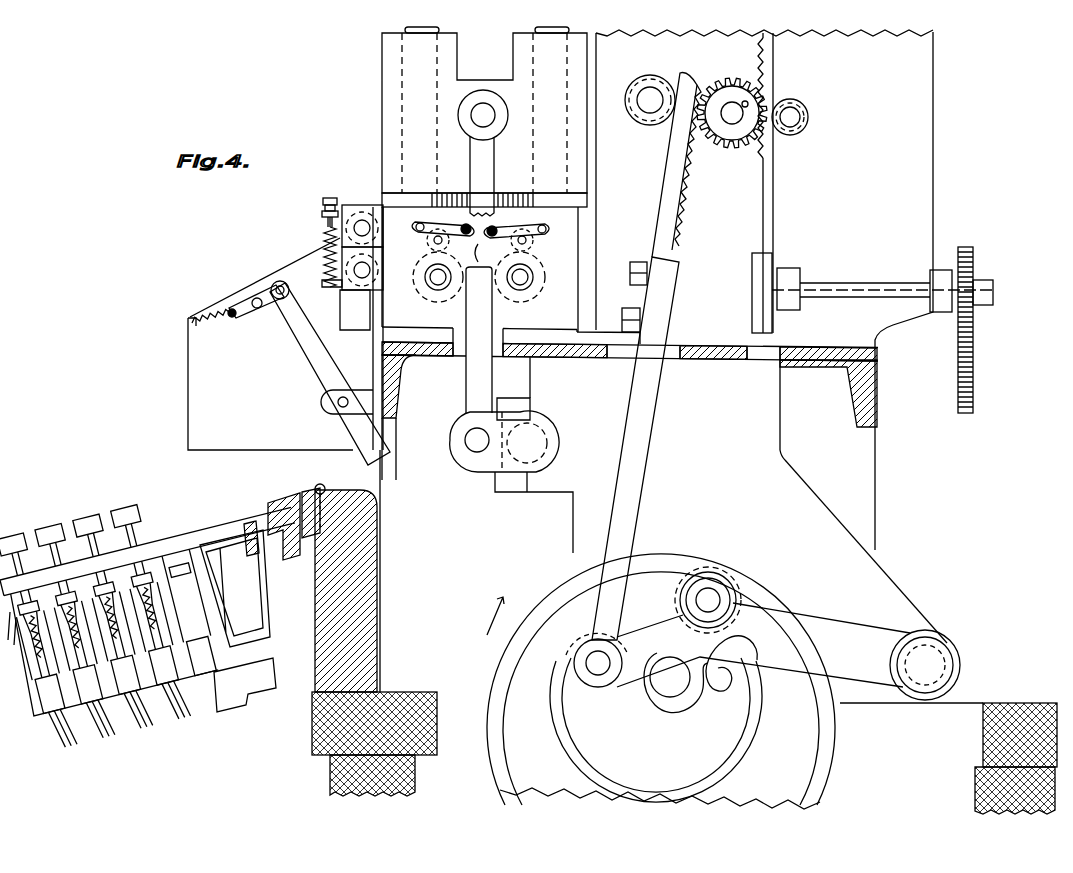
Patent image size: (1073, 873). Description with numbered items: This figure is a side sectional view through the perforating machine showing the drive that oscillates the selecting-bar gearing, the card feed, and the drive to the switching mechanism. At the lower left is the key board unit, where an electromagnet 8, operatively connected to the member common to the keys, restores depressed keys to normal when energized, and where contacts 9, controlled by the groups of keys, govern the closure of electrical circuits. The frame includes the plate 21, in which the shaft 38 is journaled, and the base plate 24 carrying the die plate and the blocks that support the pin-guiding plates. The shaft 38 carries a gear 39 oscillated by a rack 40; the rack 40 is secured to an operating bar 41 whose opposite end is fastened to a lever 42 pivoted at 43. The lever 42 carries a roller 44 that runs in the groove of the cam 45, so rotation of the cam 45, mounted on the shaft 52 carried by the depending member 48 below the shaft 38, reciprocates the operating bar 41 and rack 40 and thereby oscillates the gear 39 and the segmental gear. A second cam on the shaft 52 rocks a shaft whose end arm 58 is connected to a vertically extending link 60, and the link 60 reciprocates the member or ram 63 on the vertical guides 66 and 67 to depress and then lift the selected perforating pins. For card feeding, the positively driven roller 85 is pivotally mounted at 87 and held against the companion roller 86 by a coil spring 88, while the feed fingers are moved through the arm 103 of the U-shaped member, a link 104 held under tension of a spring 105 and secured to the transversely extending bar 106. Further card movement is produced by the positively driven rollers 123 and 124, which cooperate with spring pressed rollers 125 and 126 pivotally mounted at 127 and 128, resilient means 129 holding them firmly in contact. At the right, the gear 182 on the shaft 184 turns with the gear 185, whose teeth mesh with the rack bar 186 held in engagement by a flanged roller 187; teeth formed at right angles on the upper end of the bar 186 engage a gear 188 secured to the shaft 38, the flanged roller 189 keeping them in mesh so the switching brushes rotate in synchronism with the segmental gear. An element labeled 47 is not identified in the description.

The electromagnet 8 is at (245, 600).
The contacts 9 is at (40, 640).
The plate 21 is at (935, 160).
The base plate 24 is at (558, 364).
The shaft 38 is at (732, 124).
The gear 39 is at (728, 78).
The rack 40 is at (676, 228).
The operating bar 41 is at (646, 396).
The lever 42 is at (790, 612).
The pivot 43 is at (935, 660).
The roller 44 is at (735, 585).
The cam 45 is at (790, 772).
The guide roller 47 is at (652, 92).
The depending member 48 is at (905, 605).
The shaft 52 is at (672, 697).
The arm 58 is at (485, 470).
The link 60 is at (466, 384).
The member or ram 63 is at (392, 118).
The vertical guide 66 is at (405, 30).
The vertical guide 67 is at (535, 30).
The roller 85 is at (347, 212).
The roller 86 is at (347, 270).
The pivot 87 is at (380, 232).
The coil spring 88 is at (325, 228).
The arm 103 is at (320, 358).
The link 104 is at (272, 298).
The spring 105 is at (193, 320).
The bar 106 is at (233, 318).
The roller 123 is at (530, 292).
The roller 124 is at (430, 300).
The spring pressed roller 125 is at (533, 243).
The spring pressed roller 126 is at (427, 243).
The pivot 127 is at (492, 226).
The pivot 128 is at (481, 255).
The resilient means 129 is at (448, 222).
The gear 182 is at (973, 262).
The shaft 184 is at (850, 285).
The gear 185 is at (792, 268).
The rack bar 186 is at (774, 210).
The flanged roller 187 is at (752, 290).
The gear 188 is at (745, 104).
The flanged roller 189 is at (808, 115).